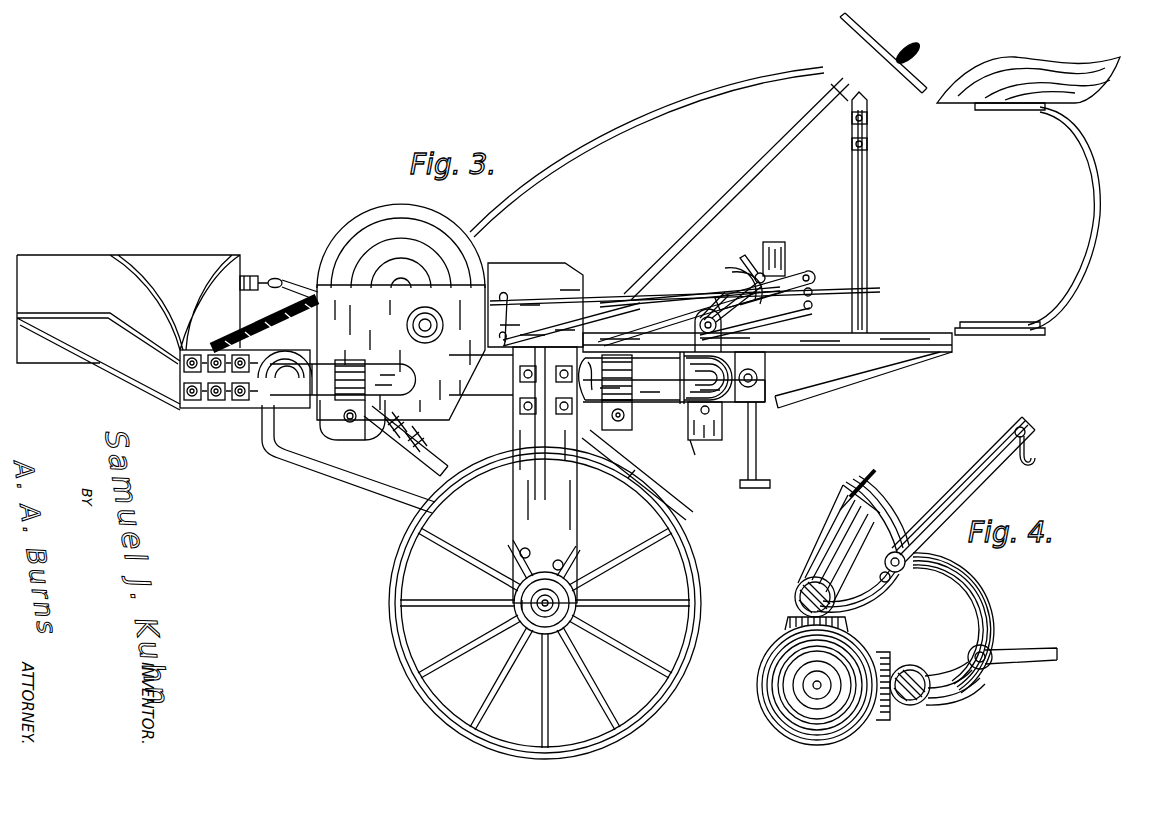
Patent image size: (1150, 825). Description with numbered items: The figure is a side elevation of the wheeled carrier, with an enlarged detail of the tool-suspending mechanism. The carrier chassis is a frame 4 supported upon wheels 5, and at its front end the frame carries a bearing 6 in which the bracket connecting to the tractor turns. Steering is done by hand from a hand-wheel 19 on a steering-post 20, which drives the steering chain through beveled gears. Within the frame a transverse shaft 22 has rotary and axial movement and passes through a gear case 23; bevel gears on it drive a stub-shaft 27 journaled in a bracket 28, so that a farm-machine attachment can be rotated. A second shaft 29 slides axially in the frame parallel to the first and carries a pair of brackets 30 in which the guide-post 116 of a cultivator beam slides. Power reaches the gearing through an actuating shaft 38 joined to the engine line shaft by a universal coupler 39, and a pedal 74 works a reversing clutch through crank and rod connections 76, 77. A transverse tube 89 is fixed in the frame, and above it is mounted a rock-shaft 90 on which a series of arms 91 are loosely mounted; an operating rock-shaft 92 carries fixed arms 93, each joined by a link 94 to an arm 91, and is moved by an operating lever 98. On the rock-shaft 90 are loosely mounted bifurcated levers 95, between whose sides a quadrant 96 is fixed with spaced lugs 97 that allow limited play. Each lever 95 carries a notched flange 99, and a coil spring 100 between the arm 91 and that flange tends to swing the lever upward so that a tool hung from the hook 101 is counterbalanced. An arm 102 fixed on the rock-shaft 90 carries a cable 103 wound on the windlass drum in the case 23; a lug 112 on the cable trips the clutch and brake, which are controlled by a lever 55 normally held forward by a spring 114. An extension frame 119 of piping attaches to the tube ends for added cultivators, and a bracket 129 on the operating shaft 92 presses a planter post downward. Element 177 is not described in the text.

In FIG. 3, the frame 4 is at (210, 408).
In FIG. 3, the wheels 5 is at (688, 565).
In FIG. 3, the bearing 6 is at (78, 255).
In FIG. 3, the hand-wheel 19 is at (895, 80).
In FIG. 3, the steering-post 20 is at (742, 190).
In FIG. 3, the transverse shaft 22 is at (345, 420).
In FIG. 3, the gear case 23 is at (401, 312).
In FIG. 3, the stub-shaft 27 is at (428, 460).
In FIG. 3, the bracket 28 is at (398, 456).
In FIG. 3, the shaft 29 is at (616, 421).
In FIG. 3, the brackets 30 is at (688, 418).
In FIG. 3, the actuating shaft 38 is at (296, 278).
In FIG. 3, the universal coupler 39 is at (247, 276).
In FIG. 3, the lever 55 is at (630, 120).
In FIG. 3, the pedal 74 is at (765, 248).
In FIG. 3, the crank connection 76 is at (612, 298).
In FIG. 3, the rod connection 77 is at (540, 320).
In FIG. 3, the tube 89 is at (712, 398).
In FIG. 4, the tube 89 is at (822, 720).
In FIG. 3, the rock-shaft 90 is at (694, 328).
In FIG. 4, the rock-shaft 90 is at (794, 597).
In FIG. 4, the arms 91 is at (868, 600).
In FIG. 3, the operating rock-shaft 92 is at (760, 376).
In FIG. 4, the operating rock-shaft 92 is at (914, 668).
In FIG. 4, the arms 93 is at (958, 690).
In FIG. 4, the link 94 is at (982, 598).
In FIG. 3, the bifurcated lever 95 is at (812, 272).
In FIG. 4, the bifurcated lever 95 is at (958, 470).
In FIG. 4, the quadrant 96 is at (842, 520).
In FIG. 3, the lugs 97 is at (735, 280).
In FIG. 4, the operating lever 98 is at (1020, 652).
In FIG. 4, the notched flange 99 is at (897, 552).
In FIG. 4, the coil spring 100 is at (825, 540).
In FIG. 3, the hook 101 is at (812, 292).
In FIG. 4, the hook 101 is at (1036, 473).
In FIG. 3, the arm 102 is at (812, 306).
In FIG. 3, the cable 103 is at (522, 300).
In FIG. 3, the lug 112 is at (682, 300).
In FIG. 3, the spring 114 is at (272, 312).
In FIG. 3, the guide-post 116 is at (707, 515).
In FIG. 3, the extension frame 119 is at (390, 385).
In FIG. 3, the bracket 129 is at (757, 442).
In FIG. 3, the bracket 177 is at (700, 440).